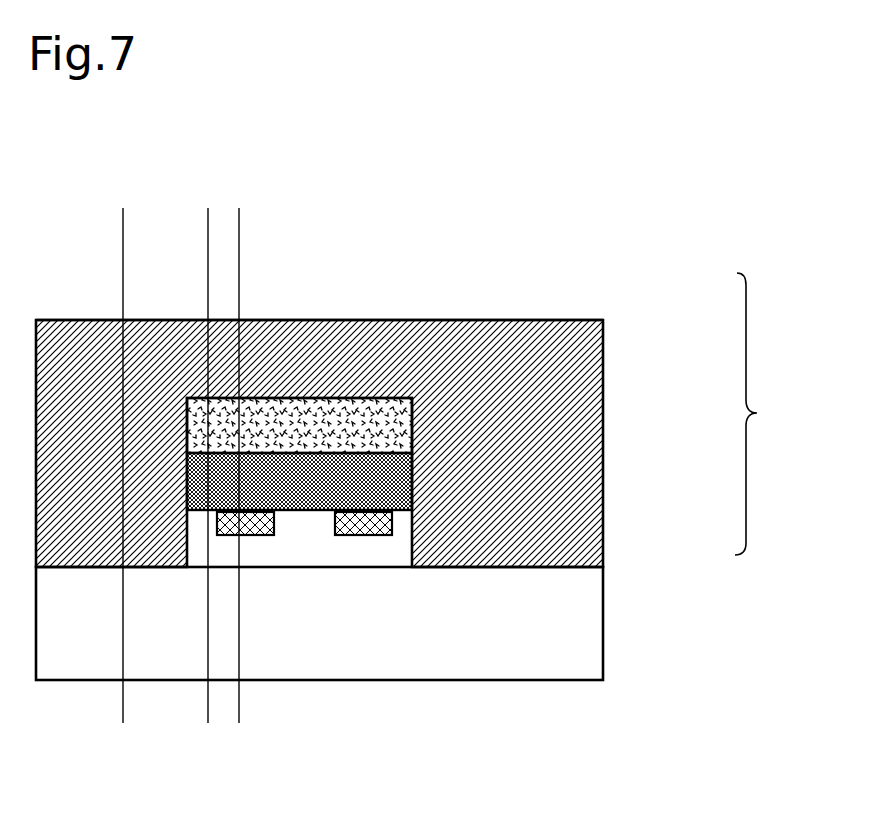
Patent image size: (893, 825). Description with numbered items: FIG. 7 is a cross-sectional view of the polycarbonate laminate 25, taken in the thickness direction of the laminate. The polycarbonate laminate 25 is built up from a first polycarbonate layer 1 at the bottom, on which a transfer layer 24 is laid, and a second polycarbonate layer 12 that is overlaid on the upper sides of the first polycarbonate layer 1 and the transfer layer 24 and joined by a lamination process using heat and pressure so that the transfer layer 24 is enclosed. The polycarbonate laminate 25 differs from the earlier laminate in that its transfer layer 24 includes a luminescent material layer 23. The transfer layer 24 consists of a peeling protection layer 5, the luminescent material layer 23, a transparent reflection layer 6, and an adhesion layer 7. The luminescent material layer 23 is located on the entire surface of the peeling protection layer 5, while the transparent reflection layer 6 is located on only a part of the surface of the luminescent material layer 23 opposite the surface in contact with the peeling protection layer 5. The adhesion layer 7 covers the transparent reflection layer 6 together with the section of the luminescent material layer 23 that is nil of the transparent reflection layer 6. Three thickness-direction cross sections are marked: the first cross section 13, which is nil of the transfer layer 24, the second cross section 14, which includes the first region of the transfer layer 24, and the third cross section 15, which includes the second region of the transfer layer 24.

The first polycarbonate layer 1 is at (603, 635).
The peeling protection layer 5 is at (413, 400).
The transparent reflection layer 6 is at (413, 467).
The adhesion layer 7 is at (392, 527).
The second polycarbonate layer 12 is at (535, 318).
The first cross section 13 is at (123, 476).
The second cross section 14 is at (212, 471).
The third cross section 15 is at (264, 476).
The luminescent material layer 23 is at (413, 400).
The transfer layer 24 is at (772, 414).
The polycarbonate laminate 25 is at (438, 263).